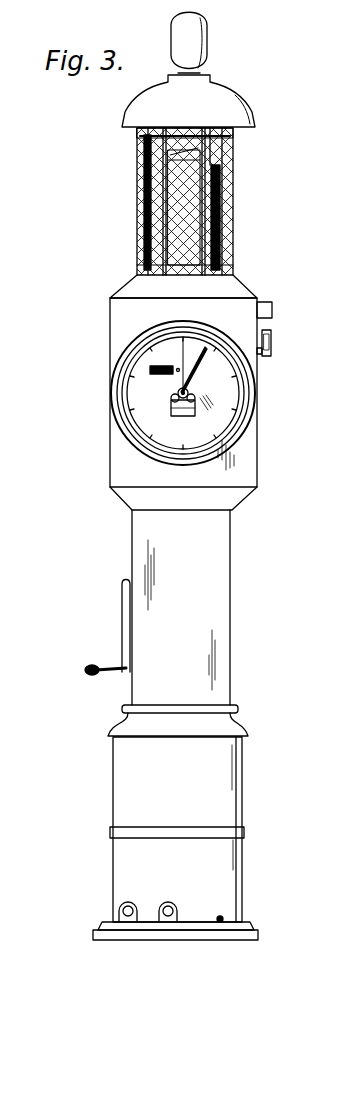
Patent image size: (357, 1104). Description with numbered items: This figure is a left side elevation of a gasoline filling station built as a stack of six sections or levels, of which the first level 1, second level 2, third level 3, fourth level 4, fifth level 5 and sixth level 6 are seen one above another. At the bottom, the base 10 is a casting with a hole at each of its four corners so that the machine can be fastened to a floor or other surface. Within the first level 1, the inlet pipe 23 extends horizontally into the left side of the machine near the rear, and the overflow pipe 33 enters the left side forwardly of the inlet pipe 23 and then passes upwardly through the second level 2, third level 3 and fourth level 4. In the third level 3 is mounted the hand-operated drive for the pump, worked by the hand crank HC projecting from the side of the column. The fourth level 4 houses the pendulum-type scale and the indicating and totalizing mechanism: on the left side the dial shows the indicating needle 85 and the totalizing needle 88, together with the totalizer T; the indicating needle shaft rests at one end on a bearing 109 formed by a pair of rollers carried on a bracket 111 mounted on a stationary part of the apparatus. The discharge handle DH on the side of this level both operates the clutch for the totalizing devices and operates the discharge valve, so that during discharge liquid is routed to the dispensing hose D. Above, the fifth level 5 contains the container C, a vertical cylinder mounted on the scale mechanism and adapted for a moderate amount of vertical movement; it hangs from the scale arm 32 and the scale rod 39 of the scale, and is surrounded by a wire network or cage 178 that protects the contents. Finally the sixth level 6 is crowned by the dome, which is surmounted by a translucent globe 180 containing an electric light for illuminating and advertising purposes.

The translucent globe 180 is at (192, 44).
The sixth level 6 is at (242, 90).
The scale arm 32 is at (236, 138).
The scale rod 39 is at (236, 178).
The wire network or cage 178 is at (138, 200).
The container C is at (190, 208).
The fifth level 5 is at (241, 247).
The hose D is at (271, 312).
The discharge handle DH is at (272, 346).
The indicating needle 85 is at (172, 366).
The totalizer T is at (150, 370).
The bearing 109 is at (172, 396).
The totalizing needle 88 is at (190, 378).
The fourth level 4 is at (106, 452).
The bracket 111 is at (181, 404).
The hand crank HC is at (120, 628).
The third level 3 is at (232, 660).
The second level 2 is at (100, 795).
The first level 1 is at (107, 880).
The overflow pipe 33 is at (168, 902).
The inlet pipe 23 is at (119, 911).
The base 10 is at (110, 937).